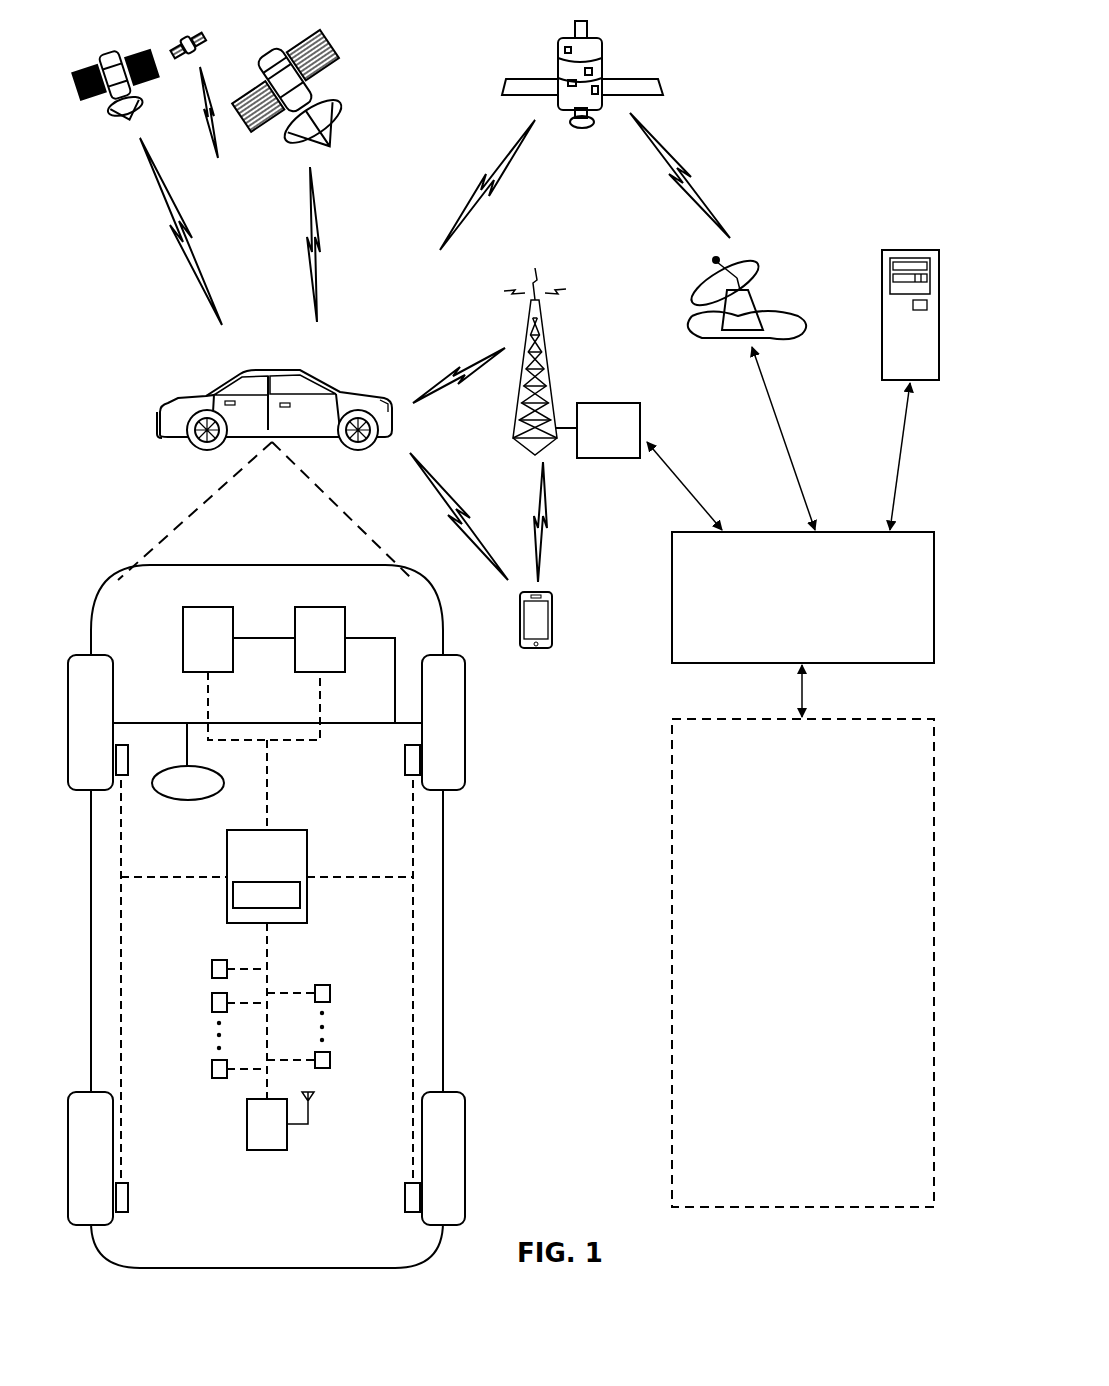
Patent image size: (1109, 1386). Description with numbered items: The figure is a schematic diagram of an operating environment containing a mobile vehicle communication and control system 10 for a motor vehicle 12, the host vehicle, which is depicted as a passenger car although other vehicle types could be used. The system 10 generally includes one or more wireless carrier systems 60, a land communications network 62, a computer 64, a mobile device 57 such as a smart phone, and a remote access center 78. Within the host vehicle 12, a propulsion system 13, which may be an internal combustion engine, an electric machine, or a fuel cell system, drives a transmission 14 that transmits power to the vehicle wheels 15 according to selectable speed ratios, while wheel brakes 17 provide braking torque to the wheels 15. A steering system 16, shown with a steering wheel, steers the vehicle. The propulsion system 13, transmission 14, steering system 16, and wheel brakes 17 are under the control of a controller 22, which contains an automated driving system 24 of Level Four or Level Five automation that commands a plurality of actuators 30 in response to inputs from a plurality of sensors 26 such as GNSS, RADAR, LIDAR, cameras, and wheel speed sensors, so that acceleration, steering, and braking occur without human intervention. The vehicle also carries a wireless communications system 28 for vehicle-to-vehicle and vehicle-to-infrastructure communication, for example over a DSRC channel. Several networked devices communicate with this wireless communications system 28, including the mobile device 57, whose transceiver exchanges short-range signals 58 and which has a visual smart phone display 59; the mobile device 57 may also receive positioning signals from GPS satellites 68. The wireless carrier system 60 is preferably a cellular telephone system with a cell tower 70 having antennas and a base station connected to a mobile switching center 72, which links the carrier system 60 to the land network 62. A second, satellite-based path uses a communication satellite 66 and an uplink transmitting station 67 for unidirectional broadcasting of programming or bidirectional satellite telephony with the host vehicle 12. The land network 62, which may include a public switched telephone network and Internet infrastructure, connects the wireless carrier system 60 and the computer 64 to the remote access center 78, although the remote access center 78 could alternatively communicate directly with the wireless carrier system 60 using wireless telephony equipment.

The mobile vehicle communication and control system 10 is at (846, 138).
The motor vehicle 12 is at (160, 400).
The propulsion system 13 is at (183, 640).
The transmission 14 is at (345, 625).
The vehicle wheels 15 is at (113, 677).
The steering system 16 is at (190, 800).
The wheel brakes 17 is at (122, 780).
The controller 22 is at (297, 899).
The automated driving system 24 is at (285, 908).
The sensors 26 is at (212, 966).
The wireless communications system 28 is at (267, 1150).
The actuators 30 is at (330, 995).
The mobile device 57 is at (540, 650).
The signals 58 is at (436, 483).
The visual smart phone display 59 is at (548, 620).
The wireless carrier system 60 is at (519, 458).
The land communications network 62 is at (936, 598).
The computer 64 is at (939, 315).
The communication satellite 66 is at (605, 52).
The uplink transmitting station 67 is at (776, 310).
The GPS satellites 68 is at (342, 55).
The cell tower 70 is at (550, 352).
The mobile switching center 72 is at (640, 410).
The remote access center 78 is at (811, 1209).